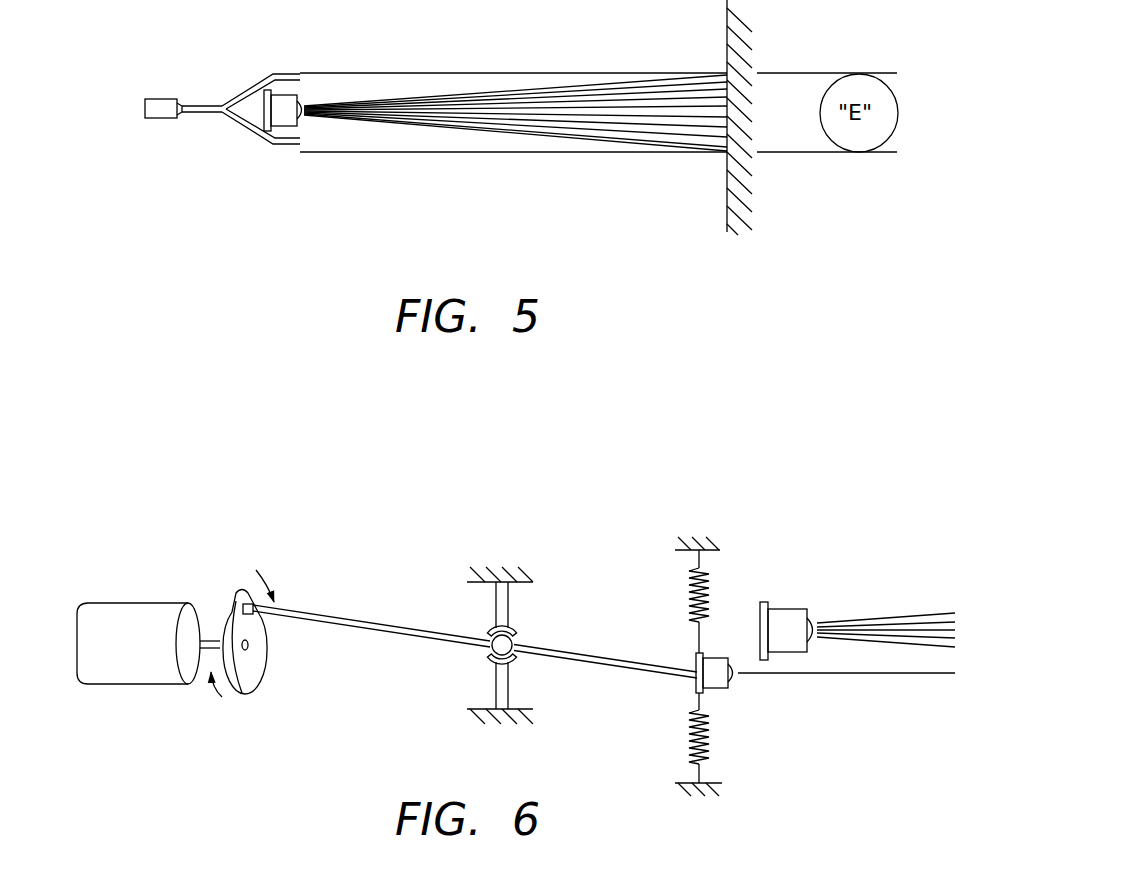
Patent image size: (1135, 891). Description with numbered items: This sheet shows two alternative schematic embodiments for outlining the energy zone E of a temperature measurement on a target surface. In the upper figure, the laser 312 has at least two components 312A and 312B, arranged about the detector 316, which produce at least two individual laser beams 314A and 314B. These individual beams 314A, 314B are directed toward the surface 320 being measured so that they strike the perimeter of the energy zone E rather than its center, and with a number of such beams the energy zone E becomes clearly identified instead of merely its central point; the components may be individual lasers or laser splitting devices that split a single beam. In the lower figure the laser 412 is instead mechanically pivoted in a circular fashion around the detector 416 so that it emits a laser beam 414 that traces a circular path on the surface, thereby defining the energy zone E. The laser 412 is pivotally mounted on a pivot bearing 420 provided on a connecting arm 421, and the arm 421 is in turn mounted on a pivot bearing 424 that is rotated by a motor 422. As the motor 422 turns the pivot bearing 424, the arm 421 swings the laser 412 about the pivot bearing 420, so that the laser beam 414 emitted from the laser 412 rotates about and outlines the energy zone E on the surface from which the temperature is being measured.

In FIG. 5, the laser 312 is at (158, 120).
In FIG. 5, the laser component 312A is at (243, 95).
In FIG. 5, the laser component 312B is at (252, 131).
In FIG. 5, the detector 316 is at (284, 116).
In FIG. 5, the laser beam 314A is at (394, 72).
In FIG. 5, the laser beam 314B is at (410, 150).
In FIG. 5, the surface 320 is at (722, 188).
In FIG. 6, the motor 422 is at (142, 686).
In FIG. 6, the pivot bearing 424 is at (261, 620).
In FIG. 6, the connecting arm 421 is at (577, 665).
In FIG. 6, the pivot bearing 420 is at (520, 628).
In FIG. 6, the laser 412 is at (714, 656).
In FIG. 6, the laser beam 414 is at (840, 675).
In FIG. 6, the detector 416 is at (793, 612).